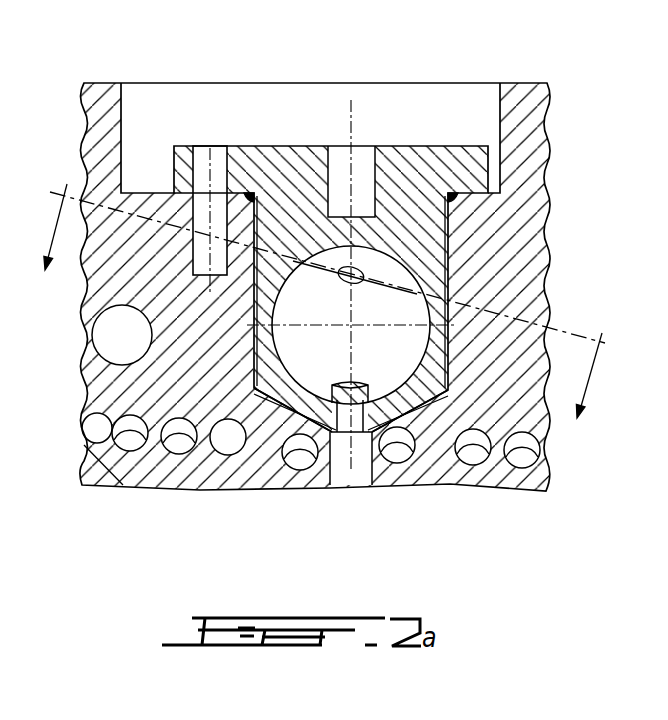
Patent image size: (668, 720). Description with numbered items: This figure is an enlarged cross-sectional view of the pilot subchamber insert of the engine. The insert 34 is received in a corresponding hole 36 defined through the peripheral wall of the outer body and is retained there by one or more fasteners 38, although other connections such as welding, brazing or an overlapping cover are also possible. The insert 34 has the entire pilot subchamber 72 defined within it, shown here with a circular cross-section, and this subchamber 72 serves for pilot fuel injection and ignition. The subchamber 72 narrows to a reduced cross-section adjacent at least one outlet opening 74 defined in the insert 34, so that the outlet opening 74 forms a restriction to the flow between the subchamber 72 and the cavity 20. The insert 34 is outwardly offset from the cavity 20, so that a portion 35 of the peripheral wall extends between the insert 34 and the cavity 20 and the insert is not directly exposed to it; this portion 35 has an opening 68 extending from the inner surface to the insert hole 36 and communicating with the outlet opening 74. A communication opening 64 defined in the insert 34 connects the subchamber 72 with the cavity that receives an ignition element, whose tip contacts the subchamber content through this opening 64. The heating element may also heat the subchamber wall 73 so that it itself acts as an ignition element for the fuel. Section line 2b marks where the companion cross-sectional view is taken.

The cavity 20 is at (201, 542).
The insert 34 is at (443, 158).
The portion of the peripheral wall 35 is at (433, 448).
The hole 36 is at (450, 217).
The fastener 38 is at (217, 160).
The communication opening 64 is at (426, 303).
The opening 68 is at (342, 462).
The pilot subchamber 72 is at (380, 262).
The subchamber wall 73 is at (416, 338).
The outlet opening 74 is at (362, 412).
The section line 2b- 2b is at (332, 287).